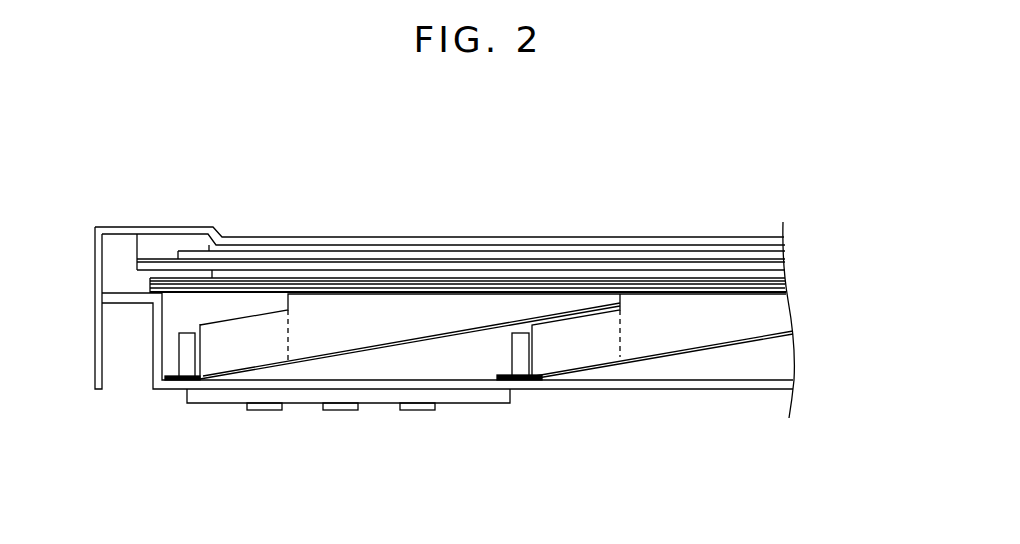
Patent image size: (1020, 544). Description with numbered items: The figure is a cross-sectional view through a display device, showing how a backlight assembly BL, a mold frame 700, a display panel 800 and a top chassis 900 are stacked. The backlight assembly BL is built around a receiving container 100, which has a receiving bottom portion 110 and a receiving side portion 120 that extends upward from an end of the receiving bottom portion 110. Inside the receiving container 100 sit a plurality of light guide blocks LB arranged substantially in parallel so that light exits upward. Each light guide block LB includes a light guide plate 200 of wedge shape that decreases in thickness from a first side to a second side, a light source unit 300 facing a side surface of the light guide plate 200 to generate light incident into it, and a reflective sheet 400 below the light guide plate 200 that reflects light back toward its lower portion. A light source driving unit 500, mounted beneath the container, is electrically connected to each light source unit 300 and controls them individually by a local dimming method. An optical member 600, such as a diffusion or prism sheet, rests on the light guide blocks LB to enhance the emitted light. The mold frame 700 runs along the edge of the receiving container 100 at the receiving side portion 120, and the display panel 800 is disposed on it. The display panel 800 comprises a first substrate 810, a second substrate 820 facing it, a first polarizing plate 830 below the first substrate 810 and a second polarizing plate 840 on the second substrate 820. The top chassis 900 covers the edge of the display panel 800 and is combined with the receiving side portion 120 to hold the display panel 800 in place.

The receiving container 100 is at (447, 390).
The receiving bottom portion 110 is at (170, 385).
The receiving side portion 120 is at (157, 353).
The light guide plate 200 is at (585, 354).
The light source unit 300 is at (519, 362).
The reflective sheet 400 is at (652, 359).
The light source driving unit 500 is at (303, 397).
The optical member 600 is at (795, 277).
The mold frame 700 is at (110, 254).
The display panel 800 is at (461, 214).
The first substrate 810 is at (583, 265).
The second substrate 820 is at (542, 257).
The first polarizing plate 830 is at (485, 181).
The second polarizing plate 840 is at (500, 245).
The top chassis 900 is at (155, 232).
The backlight assembly BL is at (840, 282).
The light guide block LB is at (640, 458).